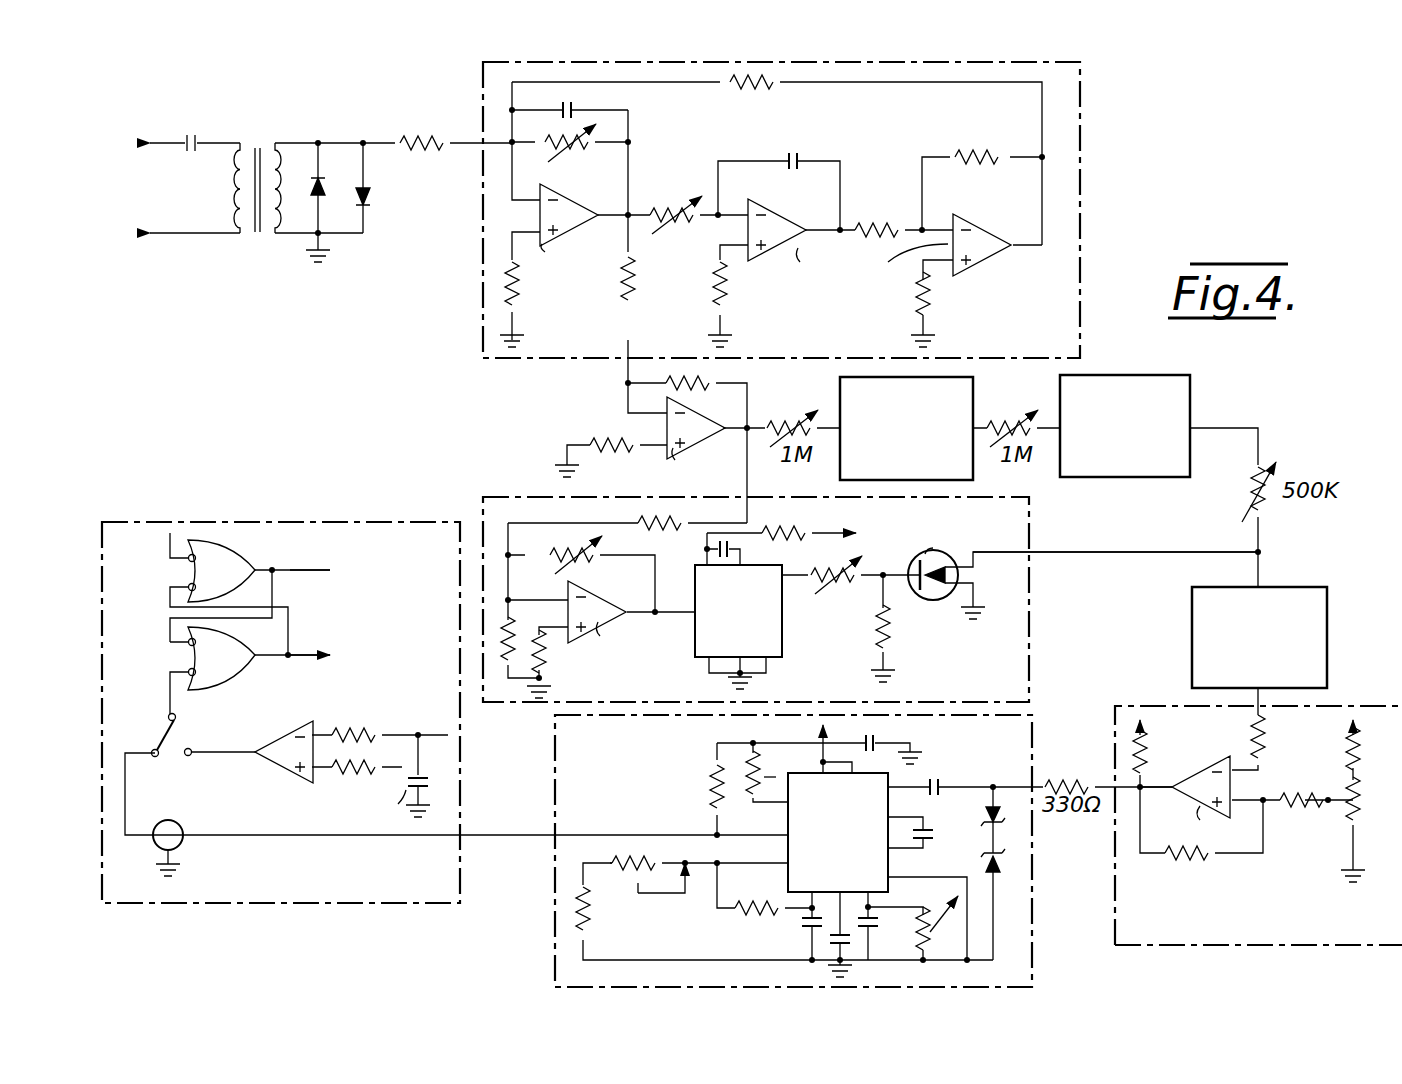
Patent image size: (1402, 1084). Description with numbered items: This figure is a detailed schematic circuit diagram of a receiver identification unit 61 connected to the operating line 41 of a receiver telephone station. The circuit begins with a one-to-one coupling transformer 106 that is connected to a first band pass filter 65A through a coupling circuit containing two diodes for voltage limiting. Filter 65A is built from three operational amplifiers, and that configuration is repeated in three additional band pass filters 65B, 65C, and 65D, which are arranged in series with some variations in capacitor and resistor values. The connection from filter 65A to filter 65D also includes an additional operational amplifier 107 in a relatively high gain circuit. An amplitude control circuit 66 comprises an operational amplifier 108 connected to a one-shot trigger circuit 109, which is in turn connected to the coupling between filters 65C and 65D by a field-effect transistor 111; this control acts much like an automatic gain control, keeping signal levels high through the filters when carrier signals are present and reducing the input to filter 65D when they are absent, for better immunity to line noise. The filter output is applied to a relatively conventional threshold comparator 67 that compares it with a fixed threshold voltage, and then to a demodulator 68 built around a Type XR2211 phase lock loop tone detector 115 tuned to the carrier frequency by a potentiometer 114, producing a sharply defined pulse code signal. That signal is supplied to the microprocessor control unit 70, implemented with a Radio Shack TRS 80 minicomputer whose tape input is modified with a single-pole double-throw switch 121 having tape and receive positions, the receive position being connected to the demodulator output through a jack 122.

The operating line 41 is at (160, 188).
The receiver identification unit 61 is at (296, 240).
The first band pass filter 65A is at (1082, 178).
The band pass filter 65B is at (973, 384).
The band pass filter 65C is at (1108, 478).
The band pass filter 65D is at (1295, 588).
The amplitude control circuit 66 is at (523, 497).
The threshold comparator 67 is at (1232, 834).
The demodulator 68 is at (555, 970).
The microprocessor control unit 70 is at (369, 519).
The TRS 80 is at (445, 696).
The coupling transformer 106 is at (256, 140).
The operational amplifier 107 is at (686, 420).
The operational amplifier 108 is at (562, 592).
The one-shot trigger circuit 109 is at (782, 657).
The field-effect transistor 111 is at (913, 598).
The potentiometer 114 is at (606, 854).
The tone detector 115 is at (890, 780).
The single-pole double-throw switch 121 is at (180, 728).
The jack 122 is at (175, 842).